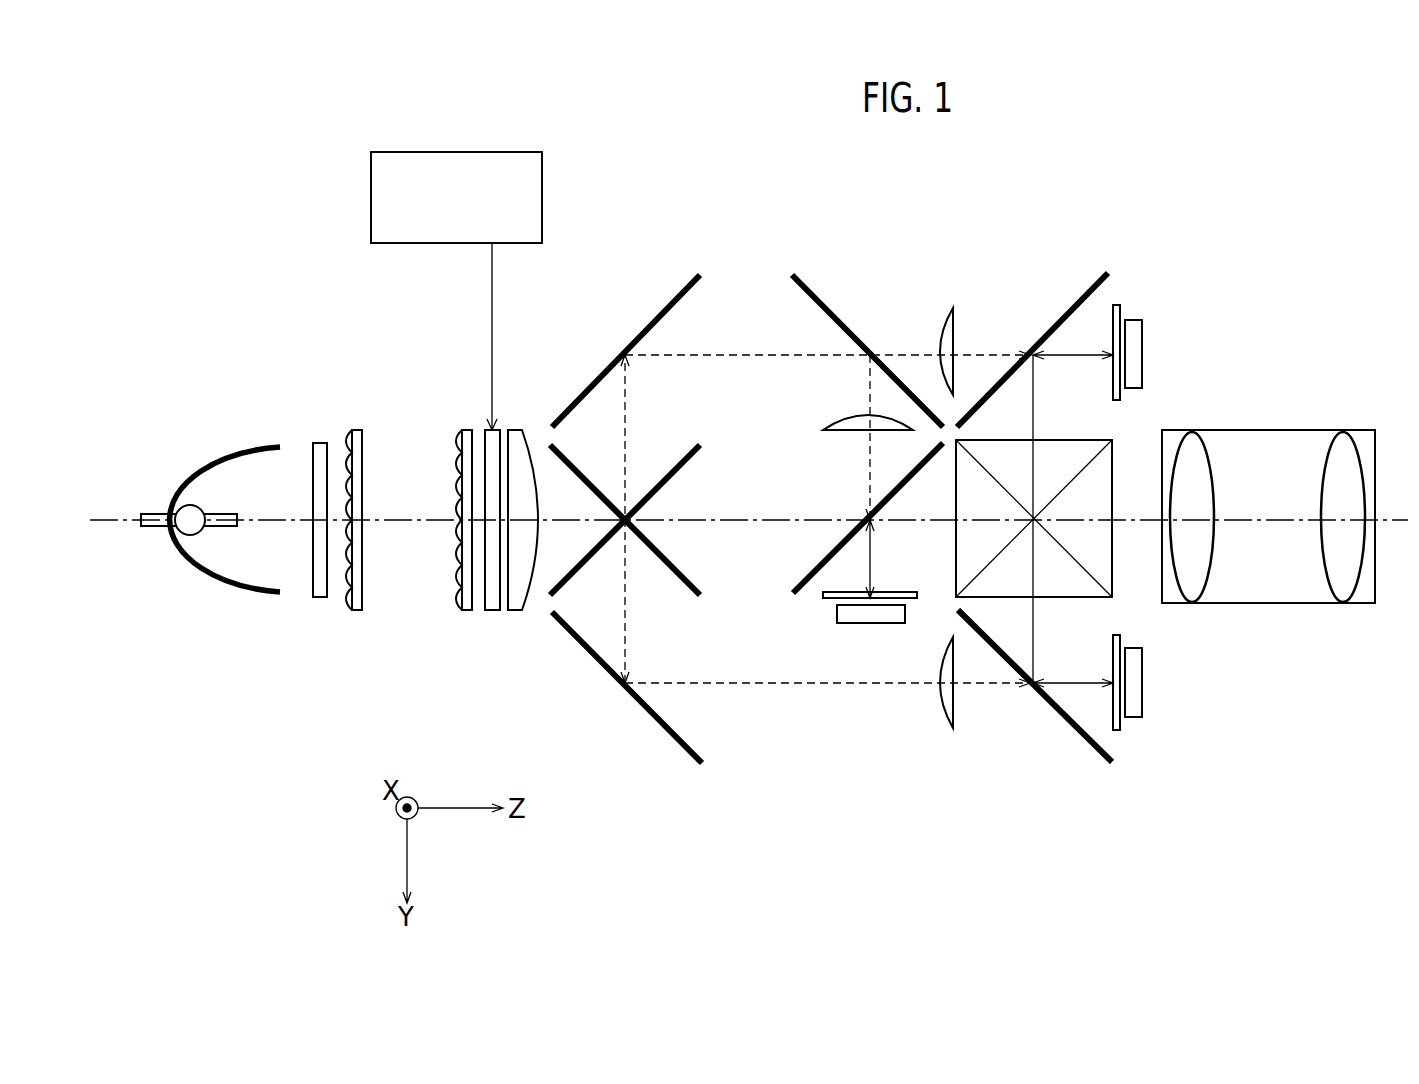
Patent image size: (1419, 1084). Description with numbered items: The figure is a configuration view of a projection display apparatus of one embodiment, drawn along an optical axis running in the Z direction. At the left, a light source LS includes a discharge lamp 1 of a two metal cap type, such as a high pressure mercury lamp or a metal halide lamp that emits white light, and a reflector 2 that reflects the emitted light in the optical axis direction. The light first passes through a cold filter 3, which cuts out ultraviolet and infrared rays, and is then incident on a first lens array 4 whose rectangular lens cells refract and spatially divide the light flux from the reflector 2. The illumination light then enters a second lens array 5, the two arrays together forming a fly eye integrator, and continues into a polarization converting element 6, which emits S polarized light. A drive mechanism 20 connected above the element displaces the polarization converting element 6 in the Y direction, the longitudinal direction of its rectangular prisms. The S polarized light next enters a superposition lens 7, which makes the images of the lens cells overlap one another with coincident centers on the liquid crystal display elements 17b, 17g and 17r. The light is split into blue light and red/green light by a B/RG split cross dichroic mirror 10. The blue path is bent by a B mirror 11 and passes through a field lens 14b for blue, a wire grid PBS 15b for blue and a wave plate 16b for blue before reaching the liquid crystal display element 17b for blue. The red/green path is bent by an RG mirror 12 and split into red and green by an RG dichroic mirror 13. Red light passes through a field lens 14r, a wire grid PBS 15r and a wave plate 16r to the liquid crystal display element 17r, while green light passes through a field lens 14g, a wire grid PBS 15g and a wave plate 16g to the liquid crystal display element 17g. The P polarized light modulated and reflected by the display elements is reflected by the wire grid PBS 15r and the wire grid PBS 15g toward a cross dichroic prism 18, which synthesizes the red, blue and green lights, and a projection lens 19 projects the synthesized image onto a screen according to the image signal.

The discharge lamp 1 is at (187, 512).
The reflector 2 is at (270, 445).
The cold filter 3 is at (320, 443).
The first lens array 4 is at (357, 430).
The second lens array 5 is at (467, 430).
The polarization converting element 6 is at (492, 612).
The superposition lens 7 is at (512, 430).
The B/RG split cross dichroic mirror 10 is at (675, 570).
The B mirror 11 is at (675, 740).
The RG mirror 12 is at (672, 298).
The RG dichroic mirror 13 is at (822, 298).
The field lens for red 14r is at (945, 312).
The field lens for green 14g is at (823, 418).
The field lens for blue 14b is at (945, 720).
The wire grid PBS for red 15r is at (1078, 300).
The wire grid PBS for green 15g is at (812, 565).
The wire grid PBS for blue 15b is at (1080, 740).
The wave plate for red 16r is at (1120, 306).
The wave plate for green 16g is at (830, 602).
The wave plate for blue 16b is at (1125, 722).
The liquid crystal display element for red 17r is at (1142, 348).
The liquid crystal display element for green 17g is at (870, 625).
The liquid crystal display element for blue 17b is at (1145, 685).
The cross dichroic prism 18 is at (1070, 438).
The projection lens 19 is at (1295, 428).
The drive mechanism 20 is at (458, 152).
The light source LS is at (225, 452).